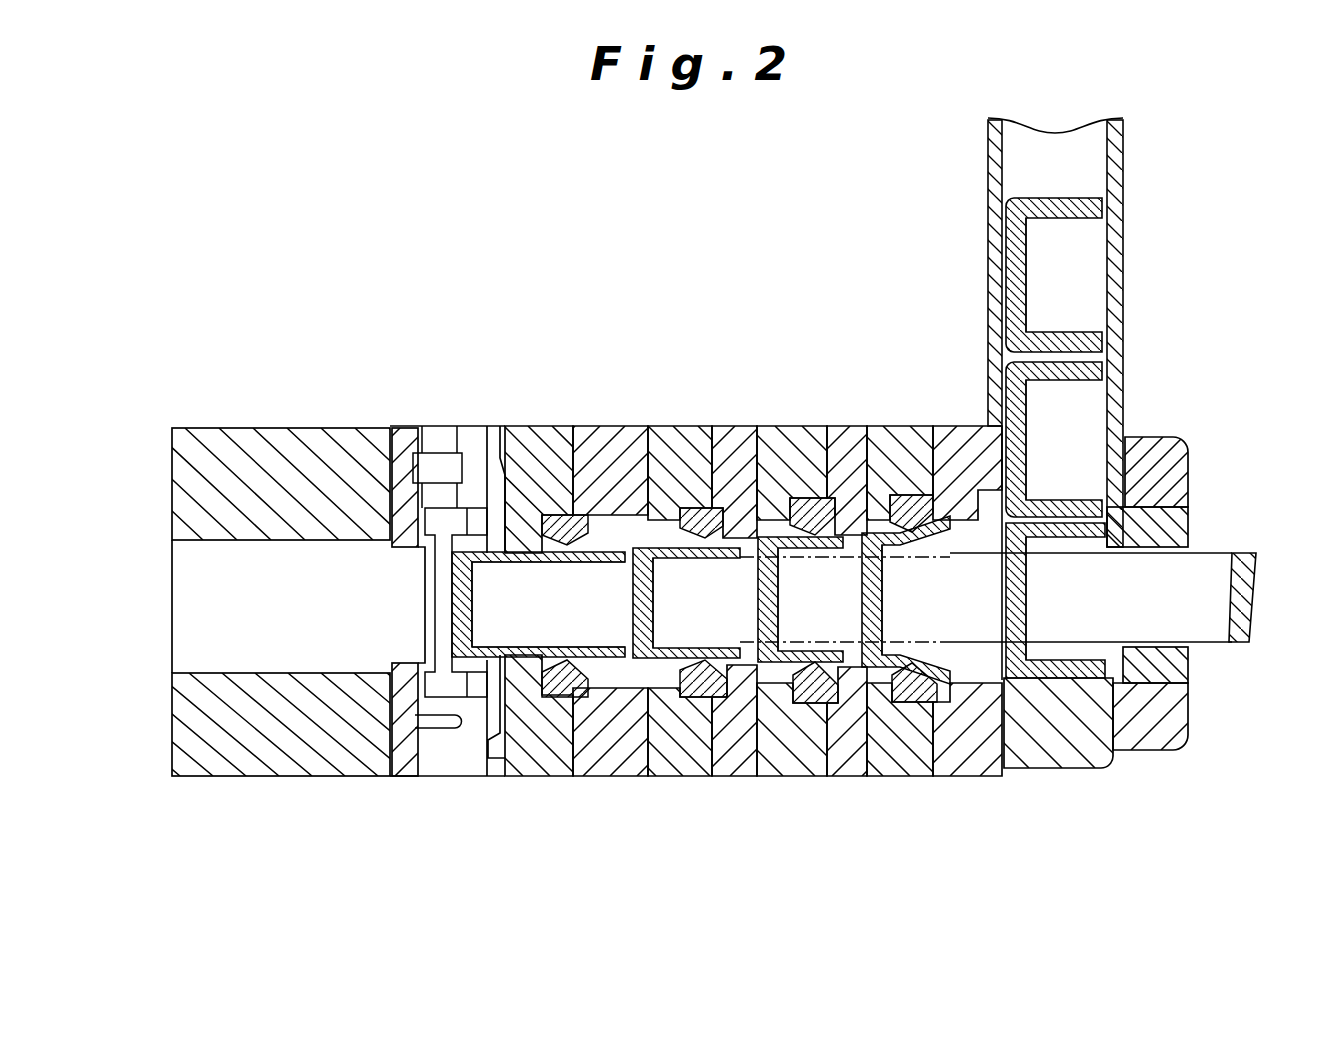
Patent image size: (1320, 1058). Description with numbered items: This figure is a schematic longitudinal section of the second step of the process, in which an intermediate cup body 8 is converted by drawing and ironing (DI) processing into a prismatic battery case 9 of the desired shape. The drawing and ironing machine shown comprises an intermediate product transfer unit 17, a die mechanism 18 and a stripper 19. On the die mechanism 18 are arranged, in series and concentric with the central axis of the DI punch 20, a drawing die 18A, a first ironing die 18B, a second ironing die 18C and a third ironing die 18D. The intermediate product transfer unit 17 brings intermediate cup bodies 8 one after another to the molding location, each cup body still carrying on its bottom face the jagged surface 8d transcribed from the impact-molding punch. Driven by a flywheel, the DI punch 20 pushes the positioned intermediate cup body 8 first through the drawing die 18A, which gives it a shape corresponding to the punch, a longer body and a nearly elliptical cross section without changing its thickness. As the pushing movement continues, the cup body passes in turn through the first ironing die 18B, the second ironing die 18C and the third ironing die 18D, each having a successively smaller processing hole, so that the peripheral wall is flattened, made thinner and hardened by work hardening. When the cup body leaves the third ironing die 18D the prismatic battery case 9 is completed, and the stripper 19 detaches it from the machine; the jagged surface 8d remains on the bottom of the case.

The intermediate cup body 8 is at (1030, 197).
The jagged surface 8d is at (478, 592).
The prismatic battery case 9 is at (460, 603).
The intermediate product transfer unit 17 is at (1123, 298).
The die mechanism 18 is at (739, 705).
The drawing die 18A is at (887, 677).
The first ironing die 18B is at (795, 702).
The second ironing die 18C is at (700, 697).
The third ironing die 18D is at (558, 695).
The stripper 19 is at (447, 690).
The DI punch 20 is at (1207, 593).